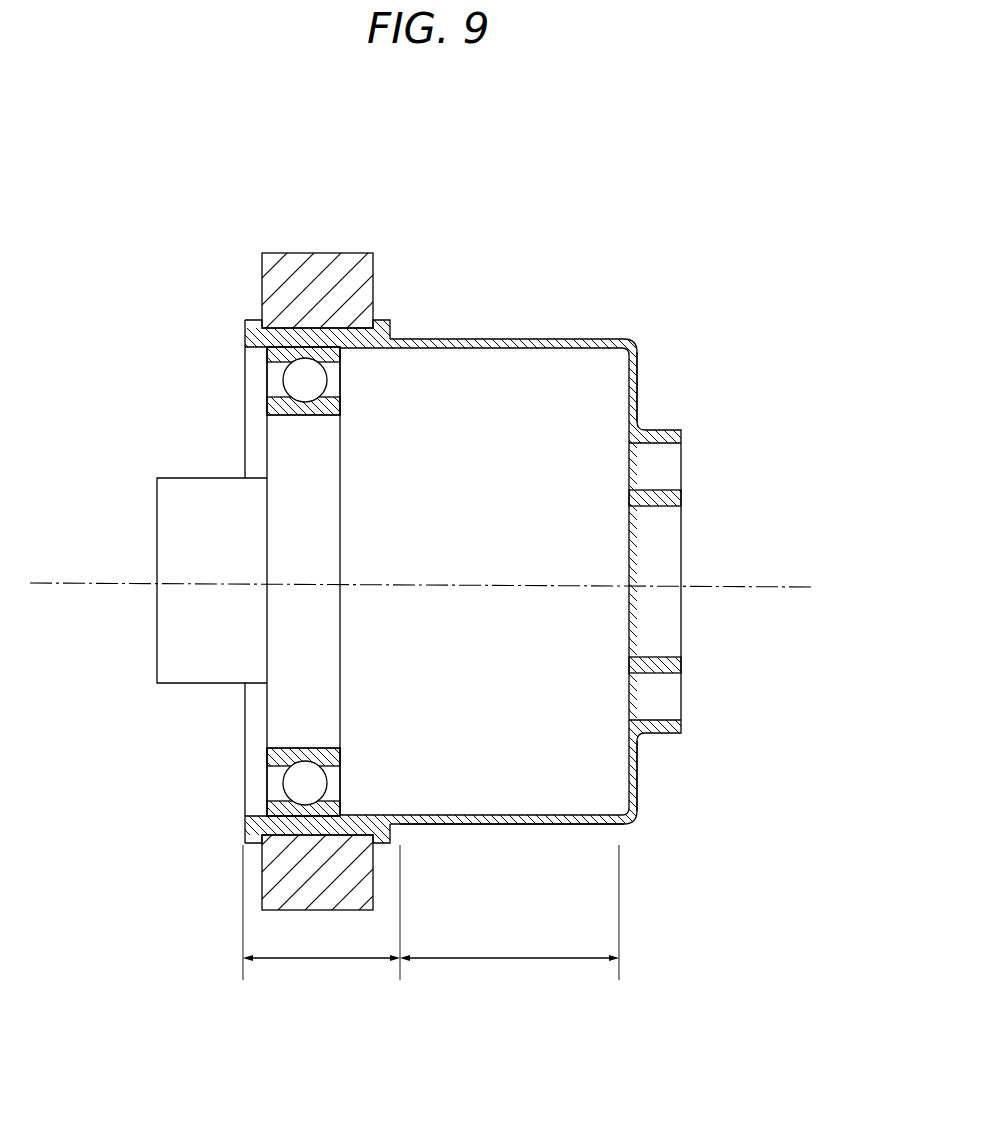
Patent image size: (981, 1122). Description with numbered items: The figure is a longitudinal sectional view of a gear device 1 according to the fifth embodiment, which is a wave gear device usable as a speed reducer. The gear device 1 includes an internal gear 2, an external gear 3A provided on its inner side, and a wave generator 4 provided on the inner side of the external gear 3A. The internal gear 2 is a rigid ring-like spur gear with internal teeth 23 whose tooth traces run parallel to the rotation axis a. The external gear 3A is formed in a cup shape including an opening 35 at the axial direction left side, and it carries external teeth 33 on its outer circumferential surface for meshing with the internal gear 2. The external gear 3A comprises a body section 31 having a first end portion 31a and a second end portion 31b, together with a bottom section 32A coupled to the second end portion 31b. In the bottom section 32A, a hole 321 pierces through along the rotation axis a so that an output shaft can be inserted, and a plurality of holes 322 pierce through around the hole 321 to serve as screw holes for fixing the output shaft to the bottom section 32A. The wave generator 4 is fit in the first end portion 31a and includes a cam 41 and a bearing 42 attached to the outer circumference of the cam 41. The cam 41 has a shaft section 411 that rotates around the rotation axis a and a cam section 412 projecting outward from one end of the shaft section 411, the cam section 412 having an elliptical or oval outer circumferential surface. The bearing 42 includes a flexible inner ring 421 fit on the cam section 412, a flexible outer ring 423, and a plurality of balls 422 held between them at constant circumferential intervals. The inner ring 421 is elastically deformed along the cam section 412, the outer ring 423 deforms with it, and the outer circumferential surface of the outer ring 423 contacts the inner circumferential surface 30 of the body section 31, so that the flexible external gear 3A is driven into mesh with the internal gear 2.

The gear device 1 is at (642, 157).
The internal gear 2 is at (337, 249).
The external gear 3A is at (466, 573).
The wave generator 4 is at (169, 618).
The internal teeth 23 is at (267, 363).
The inner circumferential surface 30 is at (558, 810).
The body section 31 is at (498, 825).
The first end portion 31a is at (321, 912).
The second end portion 31b is at (509, 912).
The bottom section 32A is at (638, 381).
The hole 321 is at (677, 508).
The holes 322 is at (677, 447).
The external teeth 33 is at (270, 322).
The opening 35 is at (244, 400).
The cam 41 is at (169, 660).
The shaft section 411 is at (205, 685).
The cam section 412 is at (242, 716).
The bearing 42 is at (223, 799).
The inner ring 421 is at (262, 757).
The balls 422 is at (287, 781).
The outer ring 423 is at (278, 806).
The rotation axis a is at (92, 582).